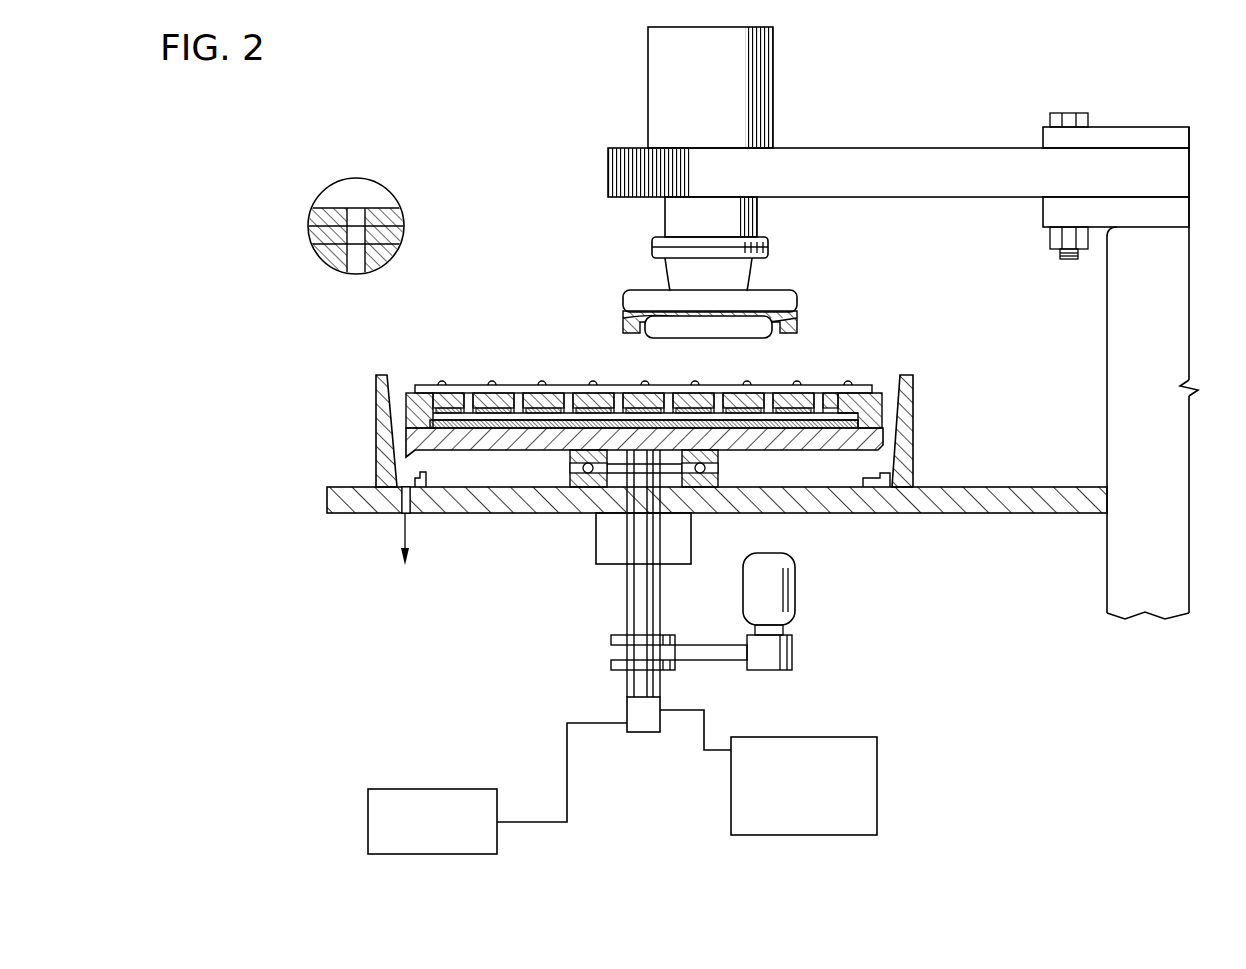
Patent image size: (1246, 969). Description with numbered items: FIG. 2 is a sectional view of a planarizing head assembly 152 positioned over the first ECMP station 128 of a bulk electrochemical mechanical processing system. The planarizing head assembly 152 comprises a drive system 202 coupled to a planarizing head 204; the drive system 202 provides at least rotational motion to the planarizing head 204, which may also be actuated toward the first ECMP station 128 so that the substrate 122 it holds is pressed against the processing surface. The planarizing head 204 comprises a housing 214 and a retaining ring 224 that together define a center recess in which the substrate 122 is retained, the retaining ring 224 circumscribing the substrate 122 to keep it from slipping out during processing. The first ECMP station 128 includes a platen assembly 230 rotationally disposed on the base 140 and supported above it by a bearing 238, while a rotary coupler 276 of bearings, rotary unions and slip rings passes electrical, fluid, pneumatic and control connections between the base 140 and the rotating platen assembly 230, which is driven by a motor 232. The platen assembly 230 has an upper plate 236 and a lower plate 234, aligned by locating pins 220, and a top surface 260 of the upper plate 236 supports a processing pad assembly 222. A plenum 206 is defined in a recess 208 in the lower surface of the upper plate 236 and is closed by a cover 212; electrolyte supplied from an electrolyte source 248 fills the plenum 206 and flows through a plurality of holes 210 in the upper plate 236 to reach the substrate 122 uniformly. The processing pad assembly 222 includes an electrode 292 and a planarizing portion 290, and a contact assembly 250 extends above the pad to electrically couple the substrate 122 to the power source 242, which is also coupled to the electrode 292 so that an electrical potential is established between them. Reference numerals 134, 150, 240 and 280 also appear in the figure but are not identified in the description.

The substrate 122 is at (665, 318).
The first ECMP station 128 is at (409, 153).
The frame wall 134 is at (1107, 390).
The base 140 is at (995, 515).
The support arm 150 is at (862, 148).
The planarizing head assembly 152 is at (632, 213).
The drive system 202 is at (647, 77).
The planarizing head 204 is at (790, 290).
The plenum 206 is at (853, 420).
The recess 208 is at (870, 429).
The holes 210 is at (445, 393).
The cover 212 is at (448, 438).
The housing 214 is at (800, 307).
The locating pins 220 is at (412, 413).
The processing pad assembly 222 is at (565, 385).
The retaining ring 224 is at (798, 326).
The platen assembly 230 is at (890, 404).
The motor 232 is at (797, 590).
The lower plate 234 is at (412, 440).
The upper plate 236 is at (377, 393).
The bearing 238 is at (718, 467).
The membrane 240 is at (790, 433).
The power source 242 is at (368, 800).
The electrolyte source 248 is at (878, 757).
The contact assembly 250 is at (533, 385).
The top surface 260 is at (440, 383).
The rotary coupler 276 is at (645, 733).
The electrolyte inlet 280 is at (660, 425).
The planarizing portion 290 is at (312, 208).
The electrode 292 is at (315, 244).